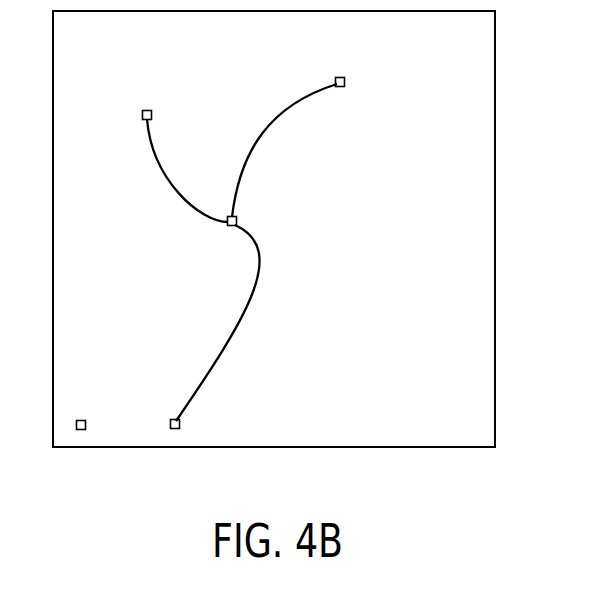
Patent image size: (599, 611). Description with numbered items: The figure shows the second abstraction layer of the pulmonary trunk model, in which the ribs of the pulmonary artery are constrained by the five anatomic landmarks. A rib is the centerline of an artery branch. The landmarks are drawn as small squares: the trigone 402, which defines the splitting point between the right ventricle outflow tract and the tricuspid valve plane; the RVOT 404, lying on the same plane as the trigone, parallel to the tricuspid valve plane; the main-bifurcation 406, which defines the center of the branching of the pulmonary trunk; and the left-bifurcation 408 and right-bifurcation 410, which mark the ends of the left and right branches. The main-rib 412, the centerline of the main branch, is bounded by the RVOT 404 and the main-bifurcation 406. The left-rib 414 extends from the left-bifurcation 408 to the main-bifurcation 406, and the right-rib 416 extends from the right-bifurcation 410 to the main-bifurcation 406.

The trigone 402 is at (76, 428).
The RVOT 404 is at (173, 430).
The main-bifurcation 406 is at (227, 224).
The left-bifurcation 408 is at (142, 113).
The right-bifurcation 410 is at (335, 80).
The main-rib 412 is at (246, 311).
The left-rib 414 is at (145, 130).
The right-rib 416 is at (300, 113).